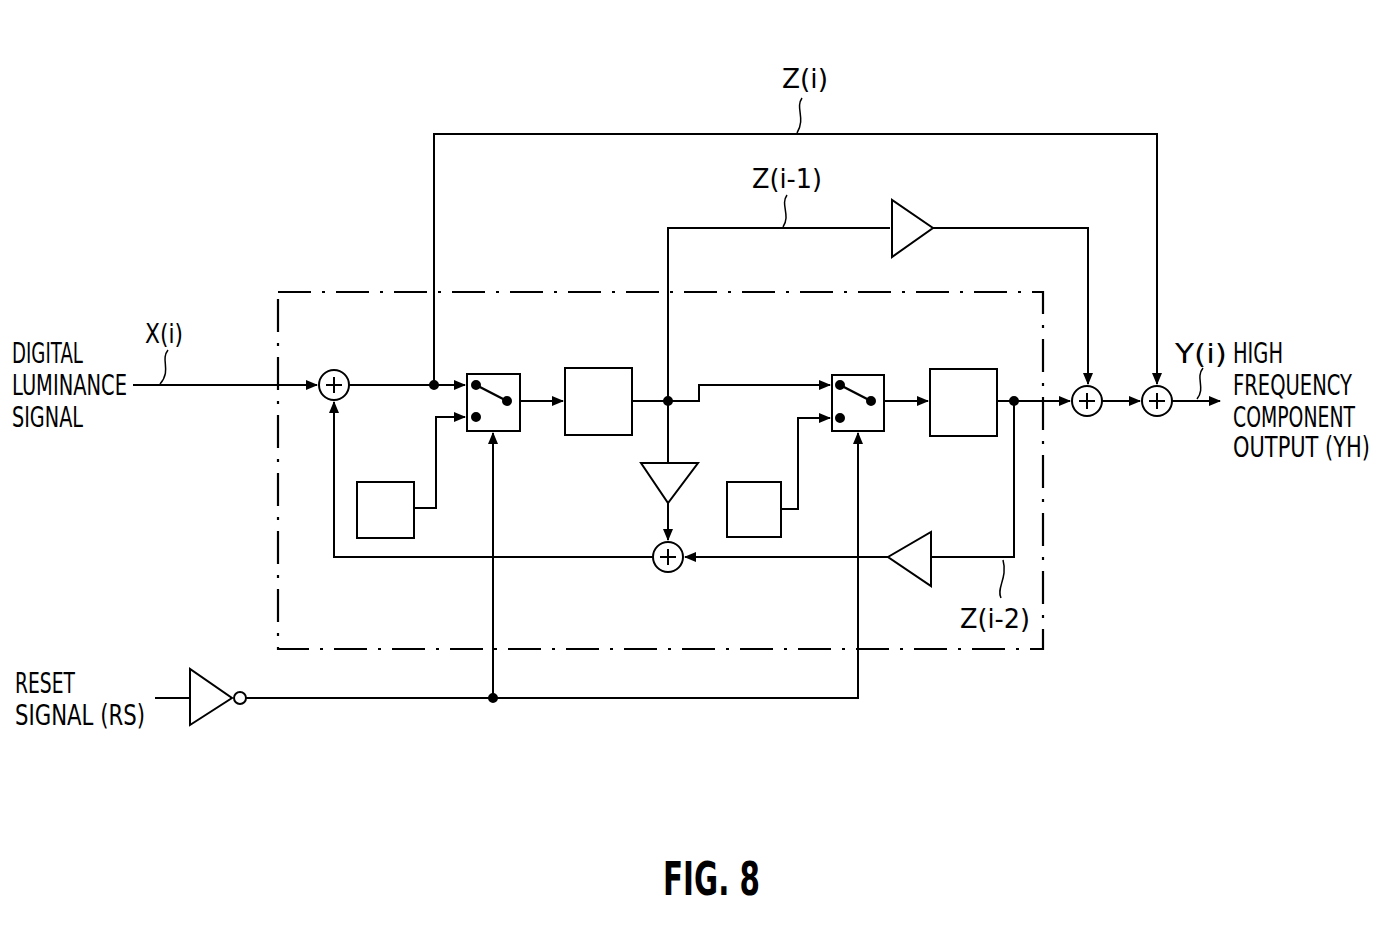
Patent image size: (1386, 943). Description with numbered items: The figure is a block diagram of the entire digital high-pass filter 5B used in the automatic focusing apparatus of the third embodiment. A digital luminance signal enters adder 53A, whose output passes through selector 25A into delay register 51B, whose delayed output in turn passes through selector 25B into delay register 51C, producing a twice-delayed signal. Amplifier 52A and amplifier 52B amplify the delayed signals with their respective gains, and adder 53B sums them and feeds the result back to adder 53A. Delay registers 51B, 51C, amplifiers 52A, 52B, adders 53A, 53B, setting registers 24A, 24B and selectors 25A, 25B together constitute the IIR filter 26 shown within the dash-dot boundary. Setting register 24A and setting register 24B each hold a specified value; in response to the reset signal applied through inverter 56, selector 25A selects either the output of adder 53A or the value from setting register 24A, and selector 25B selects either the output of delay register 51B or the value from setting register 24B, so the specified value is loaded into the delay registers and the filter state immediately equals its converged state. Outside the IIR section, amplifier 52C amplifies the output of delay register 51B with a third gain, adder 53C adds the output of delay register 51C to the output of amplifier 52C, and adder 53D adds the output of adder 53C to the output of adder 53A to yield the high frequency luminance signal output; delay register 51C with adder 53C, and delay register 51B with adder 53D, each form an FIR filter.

The digital HPF 5B is at (1022, 106).
The IIR filter 26 is at (308, 290).
The adder 53A is at (334, 369).
The selector 25A is at (488, 373).
The delay register 51B is at (591, 367).
The setting register 24A is at (382, 481).
The amplifier 52A is at (655, 479).
The adder 53B is at (672, 573).
The selector 25B is at (855, 374).
The delay register 51C is at (954, 368).
The setting register 24B is at (747, 481).
The amplifier 52B is at (915, 570).
The amplifier 52C is at (914, 213).
The adder 53C is at (1090, 417).
The adder 53D is at (1160, 417).
The inverter 56 is at (211, 718).